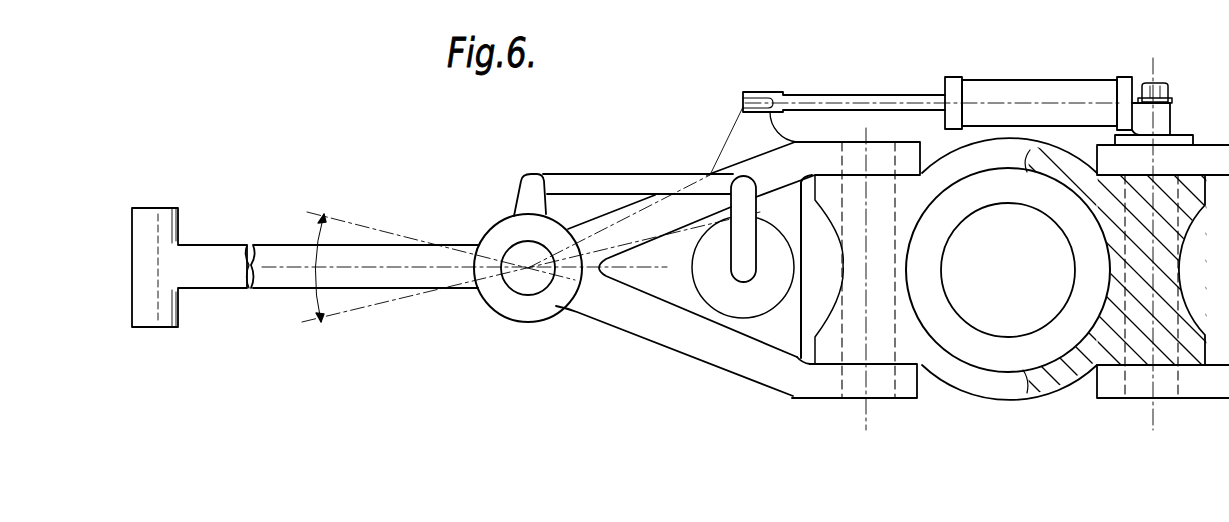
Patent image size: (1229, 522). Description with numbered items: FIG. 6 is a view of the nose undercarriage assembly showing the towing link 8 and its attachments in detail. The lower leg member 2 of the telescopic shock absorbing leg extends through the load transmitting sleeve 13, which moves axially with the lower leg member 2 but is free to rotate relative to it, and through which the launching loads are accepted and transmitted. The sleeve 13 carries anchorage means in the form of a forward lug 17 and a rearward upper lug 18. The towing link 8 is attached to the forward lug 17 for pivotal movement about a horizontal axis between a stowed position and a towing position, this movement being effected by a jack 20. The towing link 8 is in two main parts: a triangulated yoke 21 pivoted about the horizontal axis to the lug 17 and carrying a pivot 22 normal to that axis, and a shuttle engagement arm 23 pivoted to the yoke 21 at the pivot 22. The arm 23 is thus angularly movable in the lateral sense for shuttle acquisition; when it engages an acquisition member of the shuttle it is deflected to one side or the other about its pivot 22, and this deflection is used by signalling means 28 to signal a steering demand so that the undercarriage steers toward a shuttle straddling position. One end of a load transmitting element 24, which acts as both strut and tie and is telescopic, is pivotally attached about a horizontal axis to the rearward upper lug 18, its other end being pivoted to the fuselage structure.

The lower leg member 2 is at (1027, 353).
The towing link 8 is at (272, 240).
The load transmitting sleeve 13 is at (972, 390).
The forward lug 17 is at (828, 355).
The rearward upper lug 18 is at (1113, 387).
The jack 20 is at (1015, 95).
The triangulated yoke 21 is at (645, 325).
The pivot 22 is at (531, 272).
The shuttle engagement arm 23 is at (355, 252).
The load transmitting element 24 is at (1193, 160).
The signalling means 28 is at (590, 185).